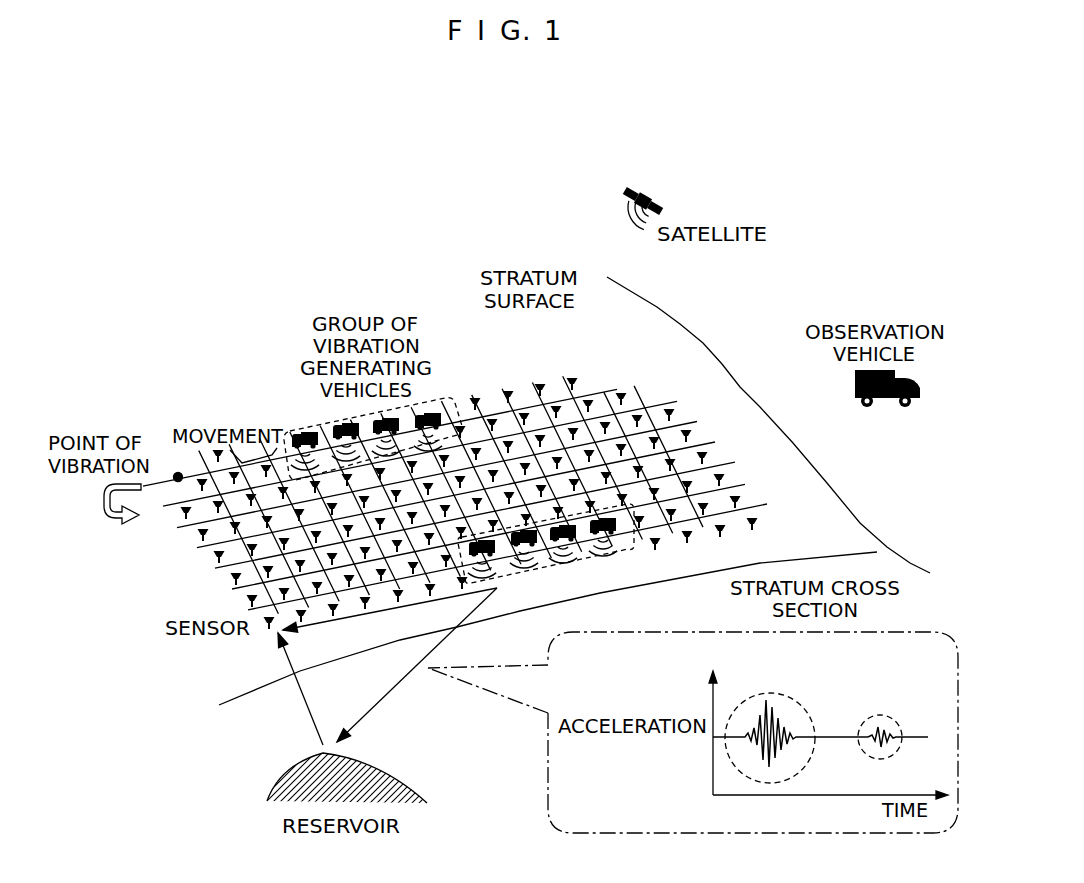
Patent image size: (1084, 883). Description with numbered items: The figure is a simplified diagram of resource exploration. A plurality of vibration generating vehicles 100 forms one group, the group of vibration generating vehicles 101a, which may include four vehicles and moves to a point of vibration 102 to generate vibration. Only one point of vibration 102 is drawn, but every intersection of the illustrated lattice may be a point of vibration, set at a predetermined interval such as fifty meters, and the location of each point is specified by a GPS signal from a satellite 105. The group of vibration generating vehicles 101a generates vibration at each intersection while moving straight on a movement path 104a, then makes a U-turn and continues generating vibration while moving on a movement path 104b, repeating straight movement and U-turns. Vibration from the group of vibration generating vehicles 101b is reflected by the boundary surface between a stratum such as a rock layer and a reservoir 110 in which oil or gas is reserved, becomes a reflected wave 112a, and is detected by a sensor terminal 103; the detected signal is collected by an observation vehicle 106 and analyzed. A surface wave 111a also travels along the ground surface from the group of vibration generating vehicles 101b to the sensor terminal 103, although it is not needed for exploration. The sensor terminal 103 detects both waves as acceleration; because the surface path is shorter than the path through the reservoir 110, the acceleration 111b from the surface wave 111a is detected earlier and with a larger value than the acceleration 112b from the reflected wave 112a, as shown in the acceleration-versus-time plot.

The vibration generating vehicle 100 is at (300, 428).
The group of vibration generating vehicles 101a is at (372, 411).
The group of vibration generating vehicles 101b is at (627, 553).
The point of vibration 102 is at (178, 477).
The sensor terminal 103 is at (266, 629).
The movement path 104a is at (608, 388).
The movement path 104b is at (668, 396).
The satellite 105 is at (653, 193).
The observation vehicle 106 is at (853, 378).
The reservoir 110 is at (393, 780).
The surface wave 111a is at (383, 613).
The acceleration 111b is at (785, 693).
The reflected wave 112a is at (306, 706).
The acceleration 112b is at (887, 713).